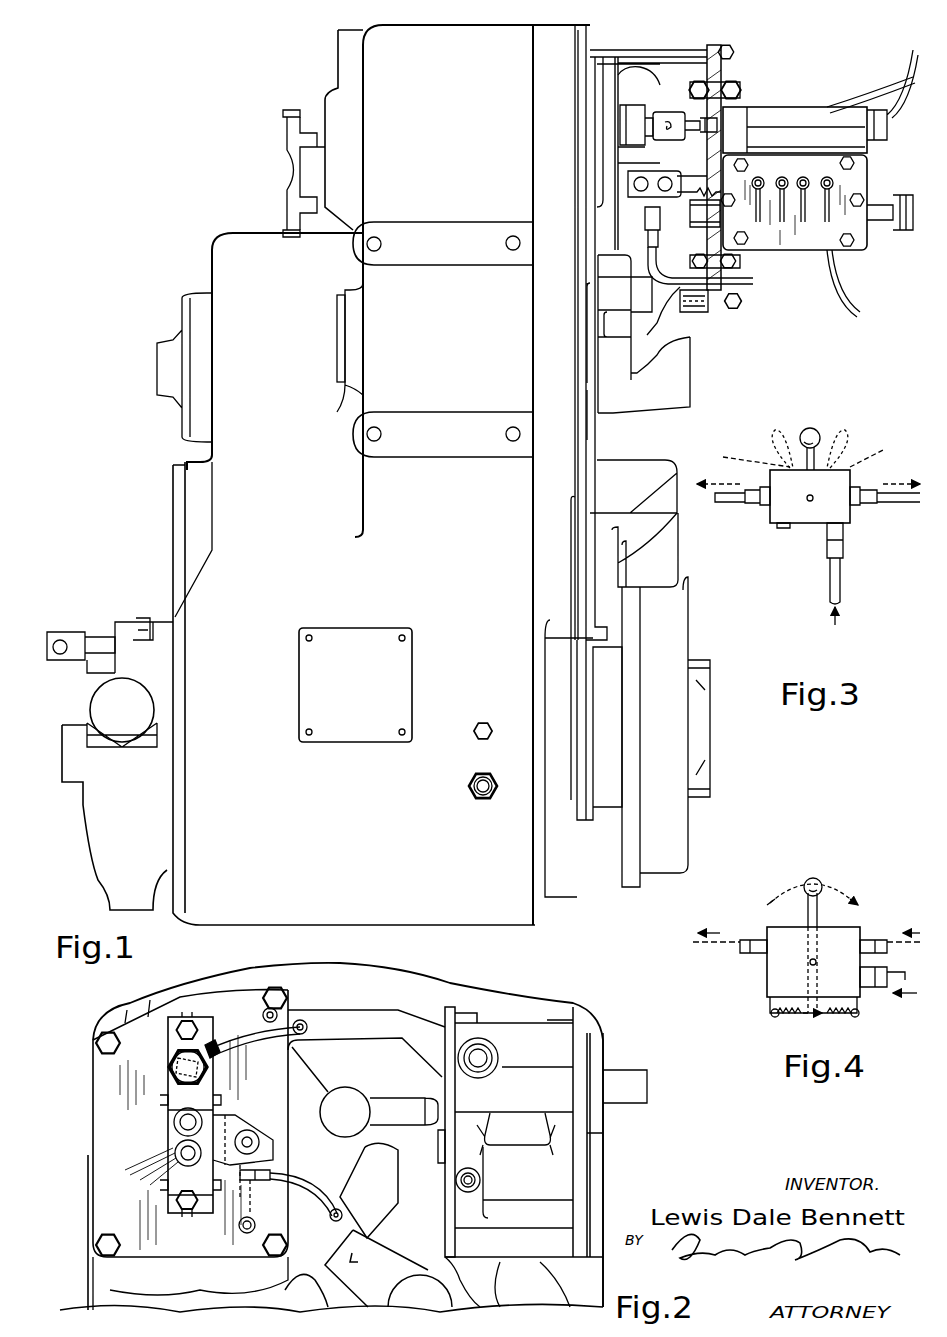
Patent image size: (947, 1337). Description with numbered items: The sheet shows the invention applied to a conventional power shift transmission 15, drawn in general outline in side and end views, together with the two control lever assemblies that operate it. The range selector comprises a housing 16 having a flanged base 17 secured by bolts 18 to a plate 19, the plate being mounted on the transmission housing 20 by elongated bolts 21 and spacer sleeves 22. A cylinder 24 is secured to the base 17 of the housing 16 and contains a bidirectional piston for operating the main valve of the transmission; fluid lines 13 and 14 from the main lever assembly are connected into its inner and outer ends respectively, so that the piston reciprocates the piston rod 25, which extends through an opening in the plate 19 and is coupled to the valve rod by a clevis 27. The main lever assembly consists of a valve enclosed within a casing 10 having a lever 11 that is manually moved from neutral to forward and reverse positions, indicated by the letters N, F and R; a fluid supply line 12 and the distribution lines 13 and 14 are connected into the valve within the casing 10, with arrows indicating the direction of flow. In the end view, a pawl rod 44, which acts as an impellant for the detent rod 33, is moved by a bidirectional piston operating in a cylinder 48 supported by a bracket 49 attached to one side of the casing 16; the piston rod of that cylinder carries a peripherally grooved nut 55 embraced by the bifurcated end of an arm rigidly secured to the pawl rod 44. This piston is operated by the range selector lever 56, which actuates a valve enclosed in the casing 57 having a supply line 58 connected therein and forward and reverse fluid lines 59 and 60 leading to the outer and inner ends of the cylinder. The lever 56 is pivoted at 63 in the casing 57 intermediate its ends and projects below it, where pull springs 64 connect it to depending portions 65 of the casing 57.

In FIG. 3, the casing 10 is at (805, 523).
In FIG. 3, the lever 11 is at (843, 410).
In FIG. 3, the fluid supply line 12 is at (842, 583).
In FIG. 1, the distribution line 13 is at (842, 100).
In FIG. 3, the distribution line 13 is at (737, 505).
In FIG. 2, the distribution line 13 is at (262, 1018).
In FIG. 1, the distribution line 14 is at (898, 70).
In FIG. 3, the distribution line 14 is at (898, 500).
In FIG. 2, the distribution line 14 is at (306, 1020).
In FIG. 1, the transmission 15 is at (320, 78).
In FIG. 2, the transmission 15 is at (500, 978).
In FIG. 1, the housing 16 is at (868, 176).
In FIG. 2, the housing 16 is at (178, 1098).
In FIG. 1, the flanged base 17 is at (740, 78).
In FIG. 2, the flanged base 17 is at (228, 1000).
In FIG. 1, the bolts 18 is at (693, 82).
In FIG. 2, the bolts 18 is at (187, 1020).
In FIG. 1, the plate 19 is at (726, 34).
In FIG. 2, the plate 19 is at (95, 1100).
In FIG. 1, the transmission housing 20 is at (377, 40).
In FIG. 2, the transmission housing 20 is at (408, 985).
In FIG. 1, the elongated bolts 21 is at (742, 58).
In FIG. 2, the elongated bolts 21 is at (278, 987).
In FIG. 1, the spacer sleeves 22 is at (622, 50).
In FIG. 1, the cylinder 24 is at (798, 107).
In FIG. 2, the cylinder 24 is at (172, 1060).
In FIG. 1, the piston rod 25 is at (712, 124).
In FIG. 1, the clevis 27 is at (662, 110).
In FIG. 2, the detent rod 33 is at (175, 1122).
In FIG. 2, the pawl rod 44 is at (175, 1153).
In FIG. 2, the cylinder 48 is at (272, 1172).
In FIG. 2, the bracket 49 is at (240, 1118).
In FIG. 2, the peripherally grooved nut 55 is at (260, 1144).
In FIG. 4, the range selector lever 56 is at (822, 880).
In FIG. 4, the casing 57 is at (775, 987).
In FIG. 4, the supply line 58 is at (890, 990).
In FIG. 4, the forward fluid line 59 is at (733, 940).
In FIG. 2, the forward fluid line 59 is at (335, 1200).
In FIG. 4, the reverse fluid line 60 is at (900, 940).
In FIG. 2, the reverse fluid line 60 is at (256, 1212).
In FIG. 4, the pivot 63 is at (808, 960).
In FIG. 4, the pull springs 64 is at (785, 1015).
In FIG. 4, the depending portions 65 is at (770, 1013).